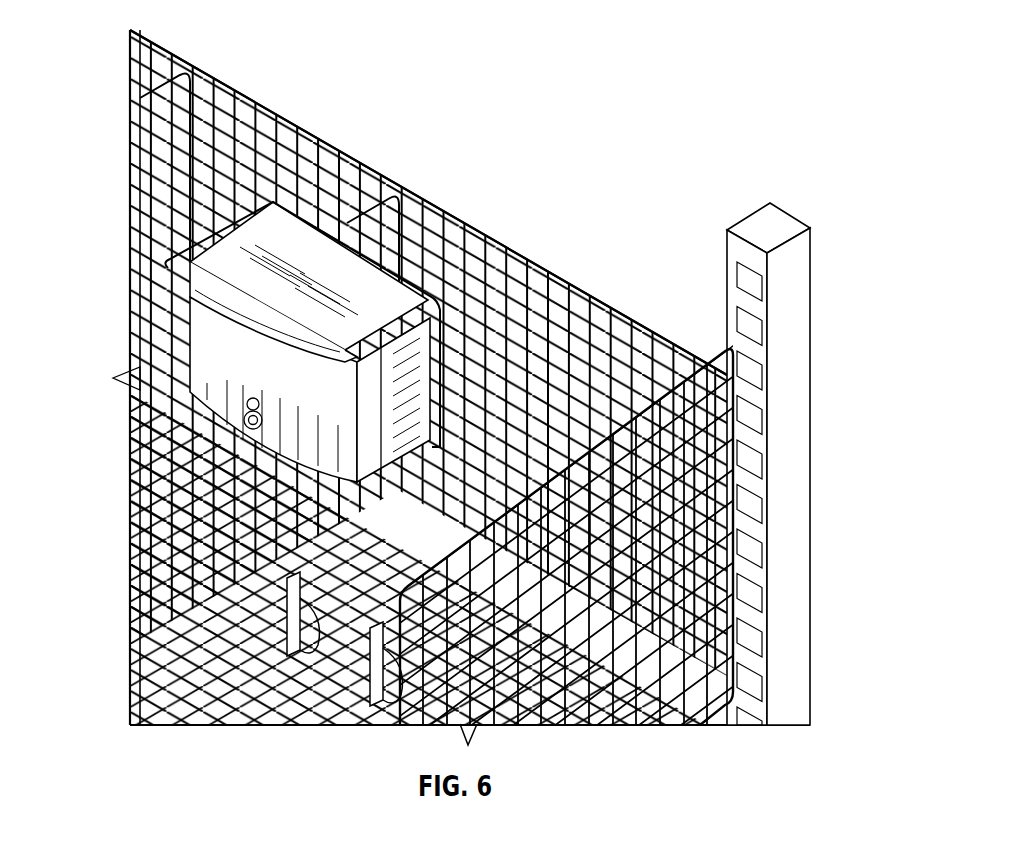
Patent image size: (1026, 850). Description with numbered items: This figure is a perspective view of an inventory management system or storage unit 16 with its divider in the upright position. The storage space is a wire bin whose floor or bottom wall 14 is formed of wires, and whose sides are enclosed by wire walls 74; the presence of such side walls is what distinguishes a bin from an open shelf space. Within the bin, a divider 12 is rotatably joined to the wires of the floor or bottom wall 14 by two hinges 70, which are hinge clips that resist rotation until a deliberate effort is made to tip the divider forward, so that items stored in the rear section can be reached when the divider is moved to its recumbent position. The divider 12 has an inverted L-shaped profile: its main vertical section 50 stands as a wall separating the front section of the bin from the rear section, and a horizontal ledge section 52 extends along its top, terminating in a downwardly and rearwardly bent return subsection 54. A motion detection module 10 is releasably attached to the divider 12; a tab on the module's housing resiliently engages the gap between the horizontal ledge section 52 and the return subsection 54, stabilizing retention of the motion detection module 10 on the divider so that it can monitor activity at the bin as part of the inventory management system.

The motion detection module 10 is at (135, 417).
The divider 12 is at (133, 650).
The floor or bottom wall 14 is at (168, 707).
The storage unit 16 is at (612, 208).
The main vertical section 50 is at (563, 717).
The horizontal ledge section 52 is at (307, 257).
The return subsection 54 is at (403, 353).
The hinge 70 is at (155, 712).
The wire walls 74 is at (135, 333).